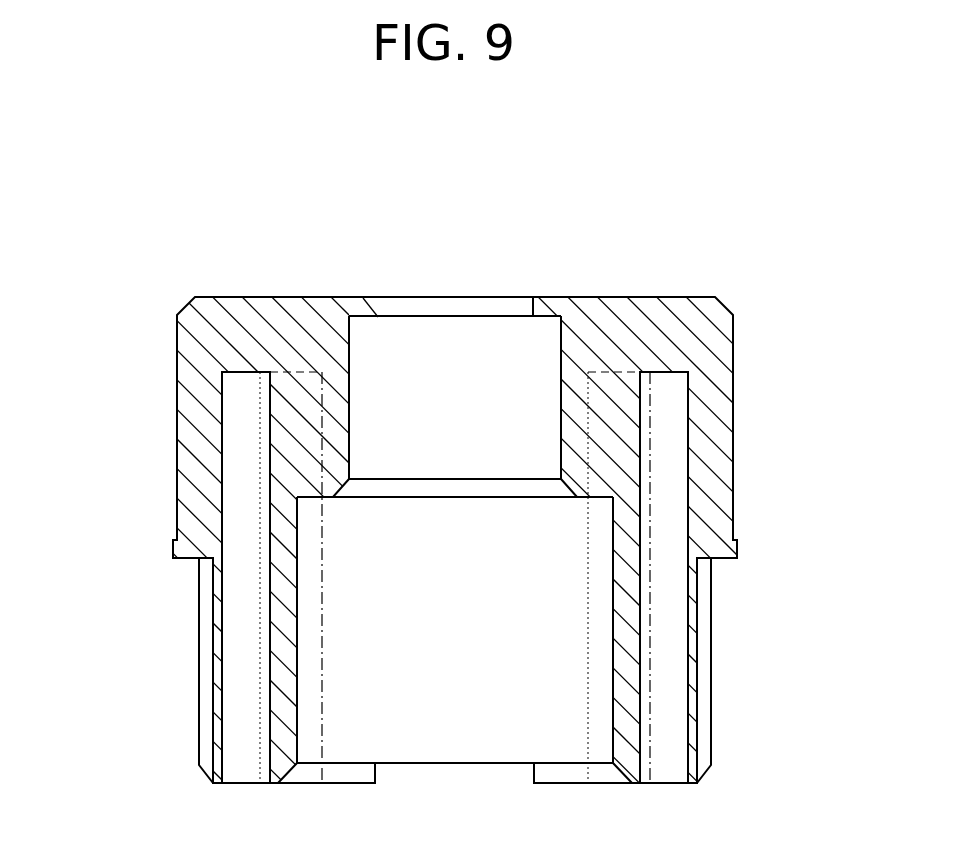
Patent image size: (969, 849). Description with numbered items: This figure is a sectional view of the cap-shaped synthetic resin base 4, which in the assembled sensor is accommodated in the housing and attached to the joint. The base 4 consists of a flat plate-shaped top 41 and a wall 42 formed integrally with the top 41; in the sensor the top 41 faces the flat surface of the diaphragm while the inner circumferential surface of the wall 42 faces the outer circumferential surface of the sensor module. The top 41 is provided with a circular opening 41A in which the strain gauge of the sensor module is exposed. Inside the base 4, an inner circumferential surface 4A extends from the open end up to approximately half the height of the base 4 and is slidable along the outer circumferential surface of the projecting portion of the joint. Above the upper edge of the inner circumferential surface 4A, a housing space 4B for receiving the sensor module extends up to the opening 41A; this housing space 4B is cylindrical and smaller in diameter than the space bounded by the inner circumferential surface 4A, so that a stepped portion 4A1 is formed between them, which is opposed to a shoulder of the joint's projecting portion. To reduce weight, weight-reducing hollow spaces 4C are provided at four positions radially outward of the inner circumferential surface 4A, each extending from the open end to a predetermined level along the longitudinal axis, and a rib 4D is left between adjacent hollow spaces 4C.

The synthetic resin base 4 is at (683, 228).
The top 41 is at (558, 298).
The opening 41A is at (378, 317).
The wall 42 is at (722, 437).
The inner circumferential surface 4A is at (297, 598).
The stepped portion 4A1 is at (313, 502).
The housing space 4B is at (352, 380).
The weight-reducing hollow space 4C is at (258, 628).
The rib 4D is at (203, 740).